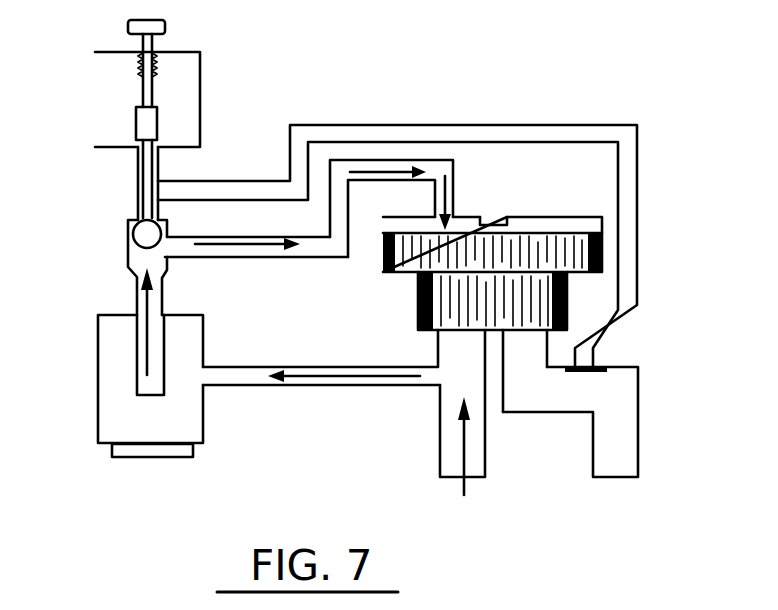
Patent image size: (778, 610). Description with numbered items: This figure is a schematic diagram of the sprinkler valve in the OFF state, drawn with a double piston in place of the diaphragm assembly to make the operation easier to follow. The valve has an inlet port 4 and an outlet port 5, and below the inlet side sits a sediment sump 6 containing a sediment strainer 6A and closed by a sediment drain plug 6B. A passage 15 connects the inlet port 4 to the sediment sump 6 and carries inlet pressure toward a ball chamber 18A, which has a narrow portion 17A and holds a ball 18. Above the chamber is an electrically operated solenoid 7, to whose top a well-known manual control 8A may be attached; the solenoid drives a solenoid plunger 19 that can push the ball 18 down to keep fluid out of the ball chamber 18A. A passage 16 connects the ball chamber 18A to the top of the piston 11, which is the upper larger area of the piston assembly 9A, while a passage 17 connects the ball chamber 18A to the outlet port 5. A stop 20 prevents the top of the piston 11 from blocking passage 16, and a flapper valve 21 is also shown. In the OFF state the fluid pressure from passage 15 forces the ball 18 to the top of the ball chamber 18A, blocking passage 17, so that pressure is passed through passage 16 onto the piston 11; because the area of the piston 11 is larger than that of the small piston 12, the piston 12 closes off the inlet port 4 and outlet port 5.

The inlet port 4 is at (478, 478).
The outlet port 5 is at (612, 478).
The sediment sump 6 is at (98, 398).
The sediment strainer 6A is at (132, 345).
The sediment drain plug 6B is at (135, 457).
The solenoid 7 is at (95, 95).
The manual control 8A is at (165, 27).
The piston assembly 9A is at (548, 303).
The piston 11 is at (587, 233).
The piston 12 is at (524, 322).
The passage 15 is at (252, 388).
The passage 16 is at (243, 258).
The passage 17 is at (330, 125).
The narrow portion 17A is at (153, 163).
The ball 18 is at (132, 229).
The ball chamber 18A is at (128, 258).
The solenoid plunger 19 is at (148, 165).
The stop 20 is at (496, 225).
The flapper valve 21 is at (588, 372).